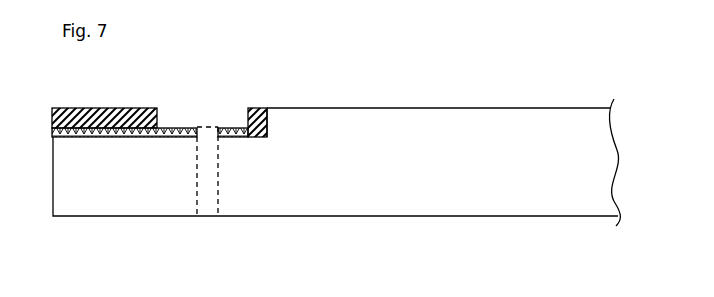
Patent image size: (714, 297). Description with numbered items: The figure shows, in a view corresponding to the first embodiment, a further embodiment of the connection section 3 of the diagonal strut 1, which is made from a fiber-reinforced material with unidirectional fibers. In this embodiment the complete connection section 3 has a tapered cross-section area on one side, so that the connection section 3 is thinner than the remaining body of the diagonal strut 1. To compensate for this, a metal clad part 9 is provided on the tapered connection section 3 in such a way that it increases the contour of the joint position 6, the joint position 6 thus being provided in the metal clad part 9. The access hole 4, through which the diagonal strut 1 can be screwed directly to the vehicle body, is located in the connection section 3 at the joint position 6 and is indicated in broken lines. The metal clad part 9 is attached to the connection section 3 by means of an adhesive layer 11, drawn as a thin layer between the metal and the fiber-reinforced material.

The diagonal strut 1 is at (405, 104).
The connection section 3 is at (122, 190).
The access hole 4 is at (218, 188).
The joint position 6 is at (177, 128).
The metal clad part 9 is at (123, 108).
The adhesive layer 11 is at (267, 137).